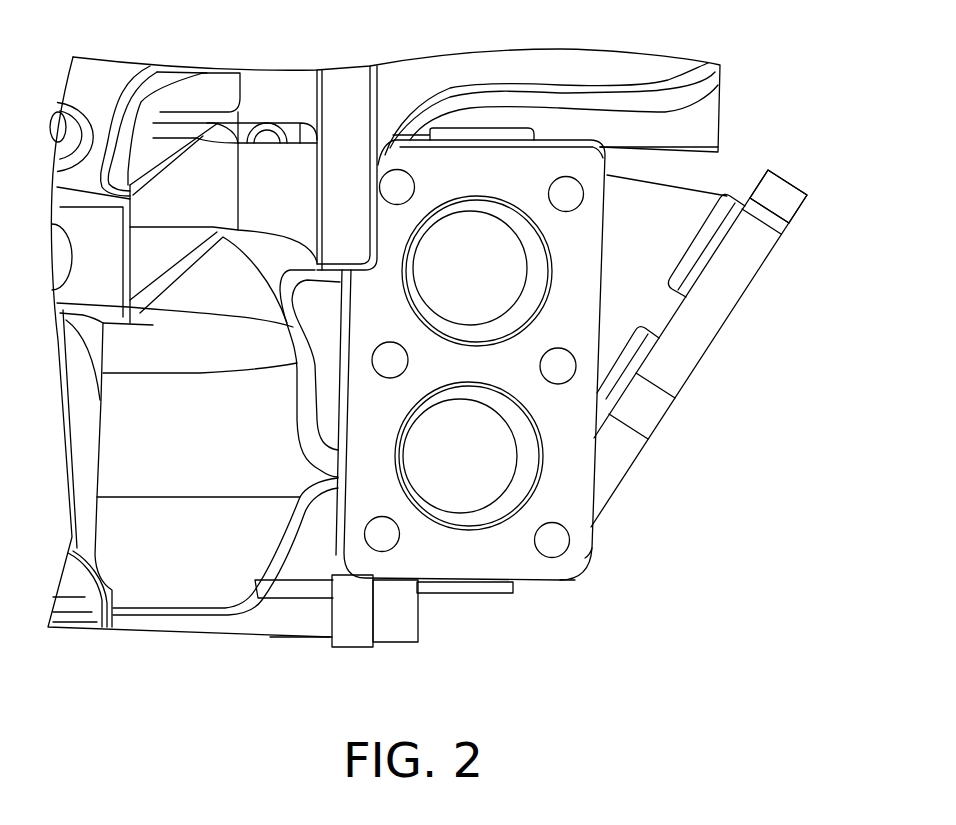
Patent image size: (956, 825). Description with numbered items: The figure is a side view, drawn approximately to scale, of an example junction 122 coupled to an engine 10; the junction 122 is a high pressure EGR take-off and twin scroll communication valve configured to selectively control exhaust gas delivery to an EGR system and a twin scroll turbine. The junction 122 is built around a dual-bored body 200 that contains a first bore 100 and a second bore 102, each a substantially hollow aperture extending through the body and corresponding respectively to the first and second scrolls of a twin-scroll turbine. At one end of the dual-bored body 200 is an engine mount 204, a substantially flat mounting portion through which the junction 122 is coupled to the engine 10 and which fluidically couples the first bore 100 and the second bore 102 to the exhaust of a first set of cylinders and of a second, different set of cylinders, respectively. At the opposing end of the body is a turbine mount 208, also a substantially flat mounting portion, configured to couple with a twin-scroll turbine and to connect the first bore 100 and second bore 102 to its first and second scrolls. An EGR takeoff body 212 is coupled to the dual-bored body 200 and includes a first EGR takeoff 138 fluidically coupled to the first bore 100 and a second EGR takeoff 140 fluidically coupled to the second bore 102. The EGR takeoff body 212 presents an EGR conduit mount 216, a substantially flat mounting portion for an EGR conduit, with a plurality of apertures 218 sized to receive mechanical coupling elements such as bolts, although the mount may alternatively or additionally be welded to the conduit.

The engine 10 is at (165, 652).
The first bore 100 is at (758, 276).
The second bore 102 is at (663, 430).
The junction 122 is at (577, 658).
The first EGR takeoff 138 is at (483, 272).
The second EGR takeoff 140 is at (505, 458).
The dual-bored body 200 is at (681, 190).
The engine mount 204 is at (352, 648).
The turbine mount 208 is at (790, 187).
The EGR takeoff body 212 is at (491, 612).
The EGR conduit mount 216 is at (578, 508).
The apertures 218 is at (415, 187).